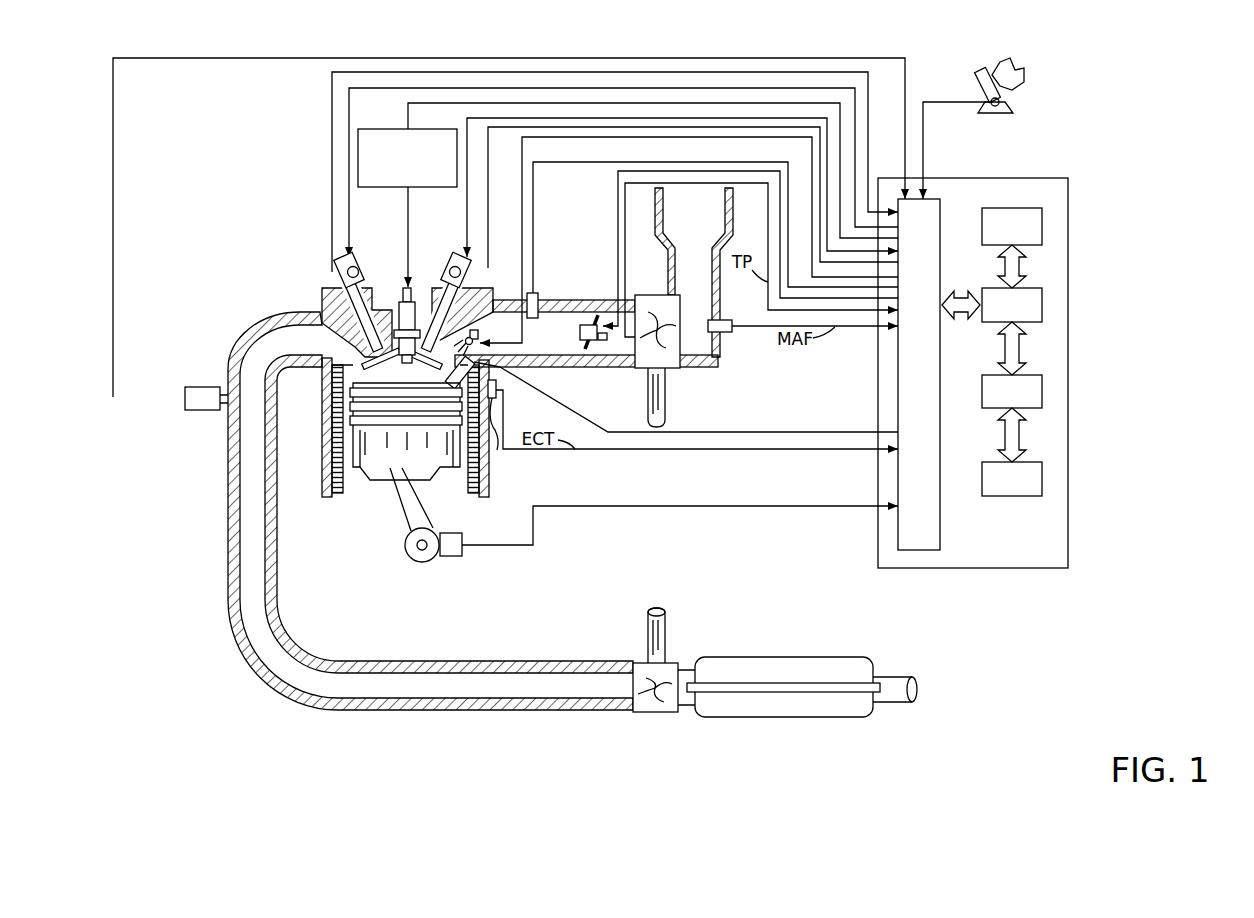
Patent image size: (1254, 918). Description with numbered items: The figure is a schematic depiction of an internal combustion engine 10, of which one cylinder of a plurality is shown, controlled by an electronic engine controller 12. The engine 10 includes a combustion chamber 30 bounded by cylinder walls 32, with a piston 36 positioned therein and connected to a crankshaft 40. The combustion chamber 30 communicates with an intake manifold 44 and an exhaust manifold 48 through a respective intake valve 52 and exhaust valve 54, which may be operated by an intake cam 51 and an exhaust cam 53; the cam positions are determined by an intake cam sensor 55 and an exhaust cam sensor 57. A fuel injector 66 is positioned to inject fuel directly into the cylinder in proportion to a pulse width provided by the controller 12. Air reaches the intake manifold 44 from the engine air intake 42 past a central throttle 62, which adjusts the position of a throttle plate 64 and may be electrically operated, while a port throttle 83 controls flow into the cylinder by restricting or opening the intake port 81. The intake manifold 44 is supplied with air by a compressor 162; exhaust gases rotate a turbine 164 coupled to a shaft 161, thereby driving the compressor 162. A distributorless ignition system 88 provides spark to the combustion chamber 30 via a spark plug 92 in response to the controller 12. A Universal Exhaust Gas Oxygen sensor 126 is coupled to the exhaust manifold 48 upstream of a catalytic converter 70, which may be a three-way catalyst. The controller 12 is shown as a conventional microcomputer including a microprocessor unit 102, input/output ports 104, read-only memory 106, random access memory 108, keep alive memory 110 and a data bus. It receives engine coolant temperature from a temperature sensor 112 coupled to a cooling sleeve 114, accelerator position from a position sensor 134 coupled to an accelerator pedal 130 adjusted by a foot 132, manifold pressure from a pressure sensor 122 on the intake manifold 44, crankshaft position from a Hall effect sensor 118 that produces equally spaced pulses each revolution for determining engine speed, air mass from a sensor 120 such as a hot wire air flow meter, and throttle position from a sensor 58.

The internal combustion engine 10 is at (262, 244).
The electronic engine controller 12 is at (1013, 359).
The combustion chamber 30 is at (405, 372).
The cylinder walls 32 is at (357, 492).
The piston 36 is at (392, 460).
The crankshaft 40 is at (410, 557).
The engine air intake 42 is at (680, 228).
The intake manifold 44 is at (538, 332).
The exhaust manifold 48 is at (282, 351).
The intake cam 51 is at (454, 260).
The intake valve 52 is at (422, 320).
The exhaust cam 53 is at (357, 258).
The exhaust valve 54 is at (320, 318).
The intake cam sensor 55 is at (472, 277).
The exhaust cam sensor 57 is at (338, 277).
The throttle position sensor 58 is at (585, 337).
The central throttle 62 is at (592, 318).
The throttle plate 64 is at (600, 325).
The fuel injector 66 is at (490, 375).
The catalytic converter 70 is at (700, 718).
The intake port 81 is at (504, 343).
The port throttle 83 is at (477, 340).
The distributorless ignition system 88 is at (368, 129).
The spark plug 92 is at (400, 305).
The microprocessor unit 102 is at (1043, 303).
The input/output ports 104 is at (943, 203).
The read-only memory 106 is at (1042, 222).
The random access memory 108 is at (1043, 392).
The keep alive memory 110 is at (1043, 479).
The temperature sensor 112 is at (498, 452).
The cooling sleeve 114 is at (486, 482).
The Hall effect sensor 118 is at (453, 556).
The air mass sensor 120 is at (726, 320).
The pressure sensor 122 is at (538, 294).
The Universal Exhaust Gas Oxygen sensor 126 is at (185, 392).
The accelerator pedal 130 is at (980, 78).
The foot 132 is at (1024, 73).
The position sensor 134 is at (1007, 102).
The shaft 161 is at (667, 378).
The compressor 162 is at (641, 295).
The turbine 164 is at (633, 668).